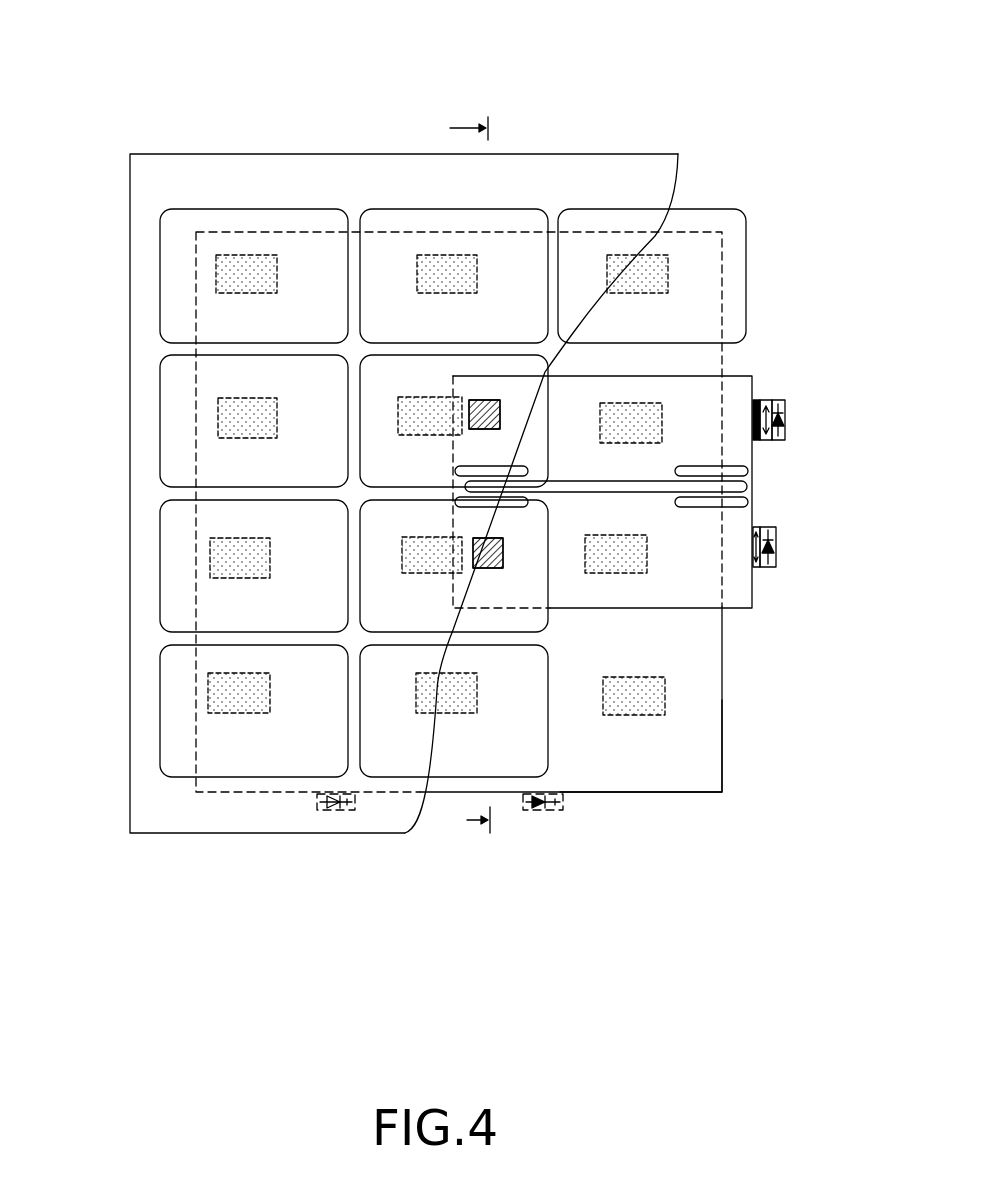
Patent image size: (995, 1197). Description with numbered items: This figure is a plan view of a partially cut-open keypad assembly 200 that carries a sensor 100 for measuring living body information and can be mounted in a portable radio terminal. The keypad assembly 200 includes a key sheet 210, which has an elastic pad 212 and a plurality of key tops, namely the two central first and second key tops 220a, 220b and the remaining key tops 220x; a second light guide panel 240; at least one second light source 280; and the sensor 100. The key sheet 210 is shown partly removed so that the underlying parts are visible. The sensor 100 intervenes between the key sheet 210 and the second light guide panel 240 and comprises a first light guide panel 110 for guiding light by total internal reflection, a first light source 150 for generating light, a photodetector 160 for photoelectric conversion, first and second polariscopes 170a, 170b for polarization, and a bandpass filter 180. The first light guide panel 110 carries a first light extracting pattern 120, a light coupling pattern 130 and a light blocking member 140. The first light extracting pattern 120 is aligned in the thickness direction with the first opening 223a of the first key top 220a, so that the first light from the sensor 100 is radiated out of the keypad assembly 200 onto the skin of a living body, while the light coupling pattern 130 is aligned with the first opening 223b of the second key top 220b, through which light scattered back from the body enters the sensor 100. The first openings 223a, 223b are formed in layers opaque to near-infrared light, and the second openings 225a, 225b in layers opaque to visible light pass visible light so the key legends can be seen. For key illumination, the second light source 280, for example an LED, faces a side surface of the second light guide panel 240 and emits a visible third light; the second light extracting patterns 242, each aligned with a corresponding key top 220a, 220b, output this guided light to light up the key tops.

The keypad assembly 200 is at (488, 35).
The key sheet 210 is at (556, 149).
The elastic pad 212 is at (652, 161).
The key tops 220x is at (372, 208).
The first key top 220a is at (360, 513).
The second key top 220b is at (360, 370).
The first opening 223a is at (490, 568).
The first opening 223b is at (472, 402).
The second opening 225a is at (417, 588).
The second opening 225b is at (453, 447).
The sensor 100 is at (652, 453).
The first light guide panel 110 is at (735, 608).
The first light extracting pattern 120 is at (495, 546).
The light coupling pattern 130 is at (486, 404).
The light blocking member 140 is at (751, 487).
The first light source 150 is at (778, 545).
The photodetector 160 is at (786, 416).
The first polariscope 170a is at (760, 567).
The second polariscope 170b is at (766, 400).
The bandpass filter 180 is at (757, 400).
The second light guide panel 240 is at (708, 794).
The second light extracting patterns 242 is at (647, 573).
The second light source 280 is at (545, 811).